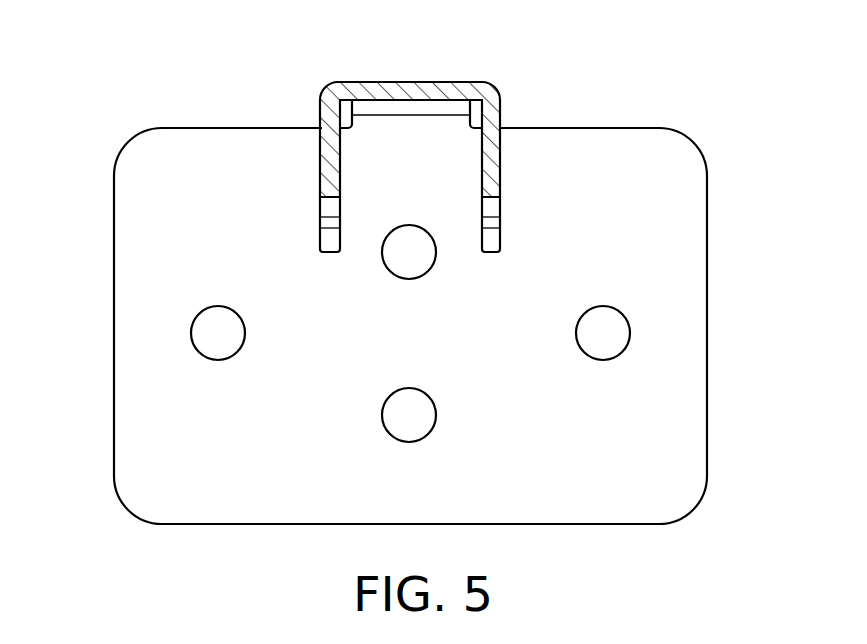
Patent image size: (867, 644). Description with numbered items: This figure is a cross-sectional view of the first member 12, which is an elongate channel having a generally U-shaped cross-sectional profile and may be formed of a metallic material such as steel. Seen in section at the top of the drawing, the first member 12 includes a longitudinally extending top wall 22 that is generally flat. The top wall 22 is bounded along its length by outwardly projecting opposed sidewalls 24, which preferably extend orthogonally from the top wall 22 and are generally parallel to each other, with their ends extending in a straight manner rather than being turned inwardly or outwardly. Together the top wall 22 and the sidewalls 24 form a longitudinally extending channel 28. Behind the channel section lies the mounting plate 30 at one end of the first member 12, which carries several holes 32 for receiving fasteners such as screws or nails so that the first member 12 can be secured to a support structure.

The first member 12 is at (505, 127).
The top wall 22 is at (407, 80).
The sidewalls 24 is at (328, 176).
The channel 28 is at (438, 190).
The mounting plate 30 is at (187, 473).
The holes 32 is at (215, 334).